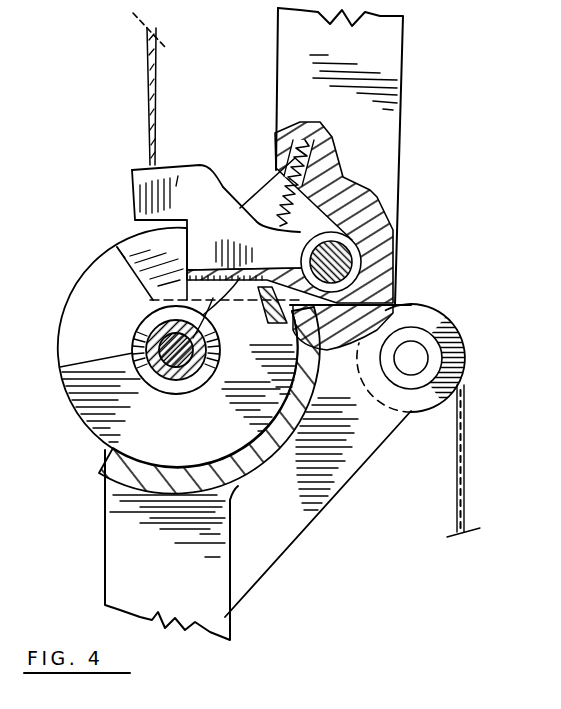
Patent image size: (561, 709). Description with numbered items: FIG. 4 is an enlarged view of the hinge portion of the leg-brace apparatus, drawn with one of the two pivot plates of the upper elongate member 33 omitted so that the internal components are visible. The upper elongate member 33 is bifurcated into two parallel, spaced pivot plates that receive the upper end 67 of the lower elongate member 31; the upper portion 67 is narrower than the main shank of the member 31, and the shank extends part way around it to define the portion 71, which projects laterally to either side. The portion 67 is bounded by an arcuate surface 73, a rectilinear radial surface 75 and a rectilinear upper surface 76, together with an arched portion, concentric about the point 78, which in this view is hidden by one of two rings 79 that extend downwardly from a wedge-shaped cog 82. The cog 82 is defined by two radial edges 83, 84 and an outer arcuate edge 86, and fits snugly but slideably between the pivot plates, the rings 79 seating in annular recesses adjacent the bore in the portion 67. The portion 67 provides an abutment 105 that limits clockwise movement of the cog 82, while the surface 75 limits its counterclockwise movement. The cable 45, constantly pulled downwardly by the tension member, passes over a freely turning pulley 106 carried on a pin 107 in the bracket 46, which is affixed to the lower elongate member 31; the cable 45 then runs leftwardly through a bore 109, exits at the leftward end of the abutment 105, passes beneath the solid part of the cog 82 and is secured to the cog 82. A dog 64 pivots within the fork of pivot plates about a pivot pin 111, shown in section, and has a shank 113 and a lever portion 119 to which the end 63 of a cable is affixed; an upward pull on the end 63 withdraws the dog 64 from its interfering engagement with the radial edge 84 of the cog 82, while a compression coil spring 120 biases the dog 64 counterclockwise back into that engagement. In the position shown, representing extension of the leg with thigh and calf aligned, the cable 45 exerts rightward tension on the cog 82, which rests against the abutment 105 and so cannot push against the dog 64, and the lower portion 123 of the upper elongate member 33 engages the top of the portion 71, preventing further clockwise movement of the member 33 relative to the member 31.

The lower elongate member 31 is at (122, 570).
The upper elongate member 33 is at (398, 100).
The cable 45 is at (465, 423).
The bracket 46 is at (288, 532).
The cable end 63 is at (147, 95).
The dog 64 is at (137, 167).
The upper portion 67 is at (182, 432).
The portion 71 is at (274, 452).
The arcuate surface 73 is at (70, 400).
The rectilinear radial surface 75 is at (61, 352).
The rectilinear upper surface 76 is at (256, 300).
The point 78 is at (165, 374).
The ring 79 is at (132, 326).
The wedge-shaped cog 82 is at (138, 274).
The radial edge 83 is at (117, 247).
The radial edge 84 is at (196, 246).
The outer arcuate edge 86 is at (133, 262).
The abutment 105 is at (256, 366).
The pulley 106 is at (447, 323).
The pin 107 is at (411, 358).
The bore 109 is at (232, 243).
The pivot pin 111 is at (340, 258).
The shank 113 is at (289, 258).
The lever portion 119 is at (175, 187).
The compression coil spring 120 is at (242, 212).
The lower portion 123 is at (360, 370).